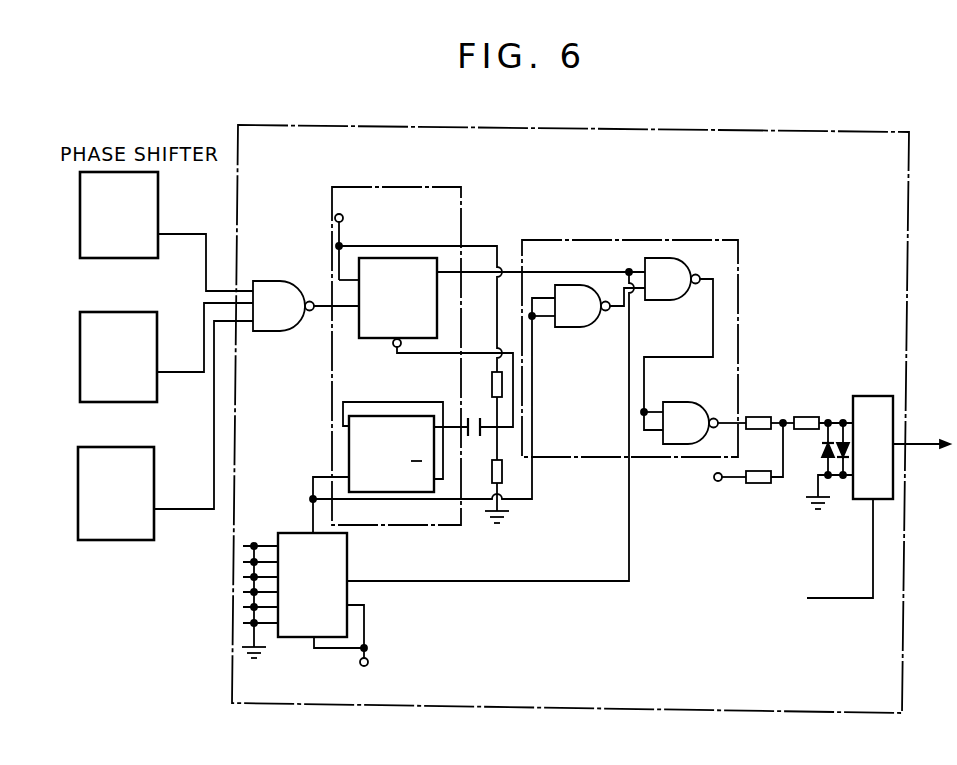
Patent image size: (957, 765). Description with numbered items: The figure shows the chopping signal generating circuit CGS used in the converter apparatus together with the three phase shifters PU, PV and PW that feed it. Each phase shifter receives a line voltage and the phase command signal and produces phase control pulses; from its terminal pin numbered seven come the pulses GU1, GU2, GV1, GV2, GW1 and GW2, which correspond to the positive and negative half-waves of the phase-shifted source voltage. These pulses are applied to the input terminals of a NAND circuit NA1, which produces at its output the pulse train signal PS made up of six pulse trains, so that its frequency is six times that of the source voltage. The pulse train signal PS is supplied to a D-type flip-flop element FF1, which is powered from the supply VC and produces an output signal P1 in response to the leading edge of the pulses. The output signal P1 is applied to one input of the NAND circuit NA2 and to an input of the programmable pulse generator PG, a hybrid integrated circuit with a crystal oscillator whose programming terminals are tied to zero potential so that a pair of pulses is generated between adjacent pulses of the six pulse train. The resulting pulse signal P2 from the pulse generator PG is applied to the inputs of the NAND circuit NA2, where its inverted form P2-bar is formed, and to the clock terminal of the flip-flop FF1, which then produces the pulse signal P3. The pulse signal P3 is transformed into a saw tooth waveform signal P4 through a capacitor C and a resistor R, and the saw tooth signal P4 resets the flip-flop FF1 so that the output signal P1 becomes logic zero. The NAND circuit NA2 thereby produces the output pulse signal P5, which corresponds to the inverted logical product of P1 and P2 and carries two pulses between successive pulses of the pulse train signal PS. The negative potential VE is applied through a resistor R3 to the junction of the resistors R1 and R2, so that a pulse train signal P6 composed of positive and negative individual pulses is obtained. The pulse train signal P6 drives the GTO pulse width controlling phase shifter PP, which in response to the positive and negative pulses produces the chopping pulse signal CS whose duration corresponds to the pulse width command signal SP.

The chopping signal generating circuit CGS is at (237, 136).
The phase shifter PU is at (119, 215).
The phase shifter PV is at (118, 357).
The phase shifter PW is at (116, 493).
The phase-shifted pulse GU1 is at (175, 235).
The phase-shifted pulse GU2 is at (171, 304).
The phase-shifted pulse GV1 is at (176, 373).
The phase-shifted pulse GV2 is at (182, 427).
The phase-shifted pulse GW1 is at (178, 510).
The phase-shifted pulse GW2 is at (183, 570).
The NAND circuit NA1 is at (287, 281).
The pulse train signal PS is at (315, 311).
The D-type flip-flop element FF1 is at (432, 189).
The supply voltage VC is at (418, 446).
The output signal P1 is at (479, 274).
The pulse signal P2 is at (310, 494).
The pulse signal P3 is at (456, 423).
The saw tooth waveform signal P4 is at (400, 355).
The capacitor C is at (477, 438).
The resistor R is at (492, 384).
The NAND circuit NA2 is at (598, 240).
The inverted pulse signal P2-bar is at (616, 312).
The output pulse signal P5 is at (718, 414).
The resistor R1 is at (758, 417).
The resistor R2 is at (801, 417).
The resistor R3 is at (760, 483).
The pulse train signal P6 is at (830, 417).
The GTO pulse width controlling phase shifter PP is at (873, 396).
The chopping pulse signal CS is at (921, 430).
The negative potential VE is at (721, 490).
The pulse width command signal SP is at (820, 555).
The programmable pulse generator PG is at (294, 637).